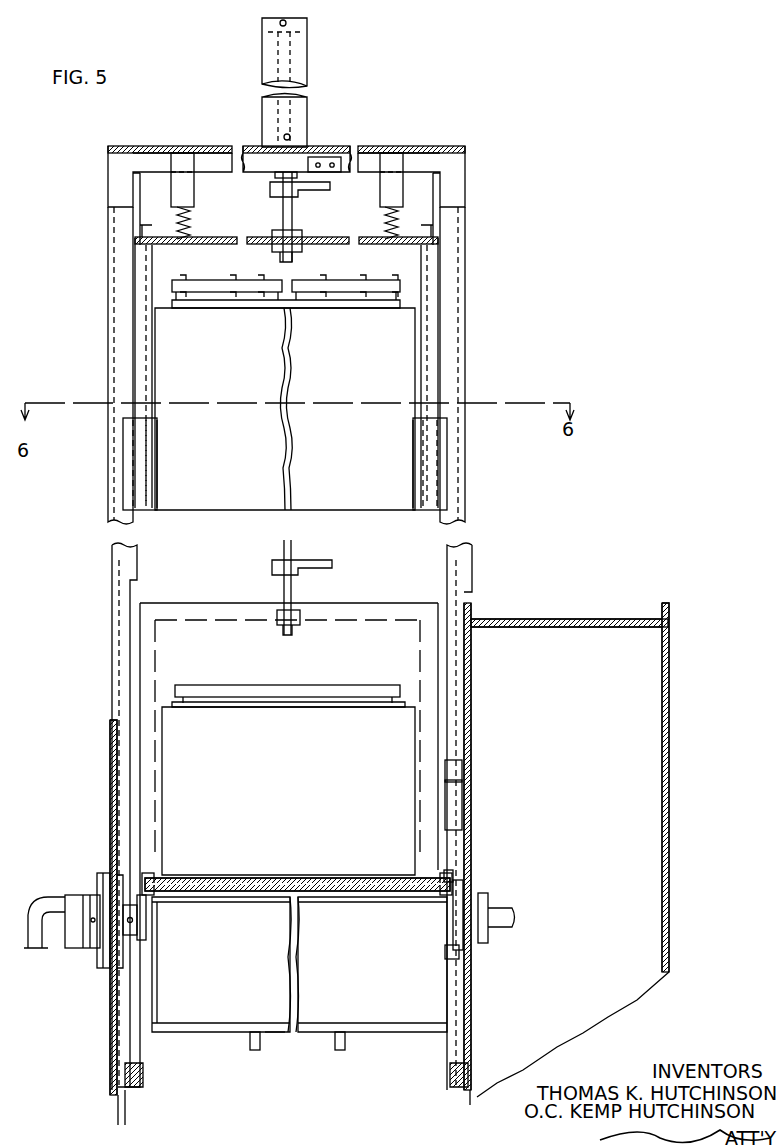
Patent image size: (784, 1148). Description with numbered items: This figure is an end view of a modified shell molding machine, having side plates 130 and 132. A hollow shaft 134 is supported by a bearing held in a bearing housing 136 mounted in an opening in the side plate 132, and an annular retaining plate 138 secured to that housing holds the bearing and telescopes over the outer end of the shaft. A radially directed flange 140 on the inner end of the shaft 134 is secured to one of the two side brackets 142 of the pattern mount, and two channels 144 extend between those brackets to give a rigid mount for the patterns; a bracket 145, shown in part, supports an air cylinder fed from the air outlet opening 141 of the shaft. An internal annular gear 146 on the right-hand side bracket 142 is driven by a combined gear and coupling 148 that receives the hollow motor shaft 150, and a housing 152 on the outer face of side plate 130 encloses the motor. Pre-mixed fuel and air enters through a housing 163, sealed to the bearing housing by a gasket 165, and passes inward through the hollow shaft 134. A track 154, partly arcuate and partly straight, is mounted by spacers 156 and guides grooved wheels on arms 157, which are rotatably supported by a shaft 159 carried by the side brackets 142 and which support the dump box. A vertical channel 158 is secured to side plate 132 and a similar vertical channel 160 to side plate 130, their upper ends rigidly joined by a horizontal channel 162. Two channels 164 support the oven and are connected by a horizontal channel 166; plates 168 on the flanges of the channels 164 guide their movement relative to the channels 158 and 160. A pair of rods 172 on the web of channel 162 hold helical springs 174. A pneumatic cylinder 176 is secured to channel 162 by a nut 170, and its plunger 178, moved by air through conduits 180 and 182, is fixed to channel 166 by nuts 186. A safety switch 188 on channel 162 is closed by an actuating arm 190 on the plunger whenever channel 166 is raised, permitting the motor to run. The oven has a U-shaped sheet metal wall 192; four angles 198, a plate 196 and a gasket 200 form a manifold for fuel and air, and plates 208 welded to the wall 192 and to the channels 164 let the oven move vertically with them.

The side plate 130 is at (473, 690).
The side plate 132 is at (112, 780).
The hollow shaft 134 is at (137, 912).
The bearing housing 136 is at (113, 975).
The retaining plate 138 is at (105, 873).
The radially directed flange 140 is at (142, 938).
The air outlet opening 141 is at (134, 921).
The side brackets 142 is at (155, 1003).
The channels 144 is at (275, 1035).
The bracket 145 is at (255, 1050).
The internal annular gear 146 is at (460, 958).
The combined gear and coupling 148 is at (456, 900).
The hollow motor shaft 150 is at (505, 912).
The housing 152 is at (668, 700).
The track 154 is at (133, 1090).
The spacers 156 is at (472, 1100).
The arms 157 is at (150, 875).
The vertically directed channel 158 is at (112, 212).
The shaft 159 is at (345, 880).
The vertical channel 160 is at (462, 503).
The horizontally directed channel 162 is at (120, 146).
The housing 163 is at (48, 907).
The channels 164 is at (150, 330).
The gasket 165 is at (88, 955).
The horizontally directed channel 166 is at (228, 236).
The plates 168 is at (128, 460).
The nut 170 is at (252, 150).
The rods 172 is at (185, 160).
The helical springs 174 is at (188, 225).
The pneumatic cylinder 176 is at (302, 60).
The plunger 178 is at (307, 33).
The conduit 180 is at (280, 23).
The conduit 182 is at (290, 137).
The nuts 186 is at (300, 245).
The safety switch 188 is at (332, 158).
The actuating arm 190 is at (272, 188).
The sheet metal wall 192 is at (170, 368).
The plate 196 is at (380, 283).
The angles 198 is at (382, 305).
The gasket 200 is at (240, 283).
The plates 208 is at (158, 468).